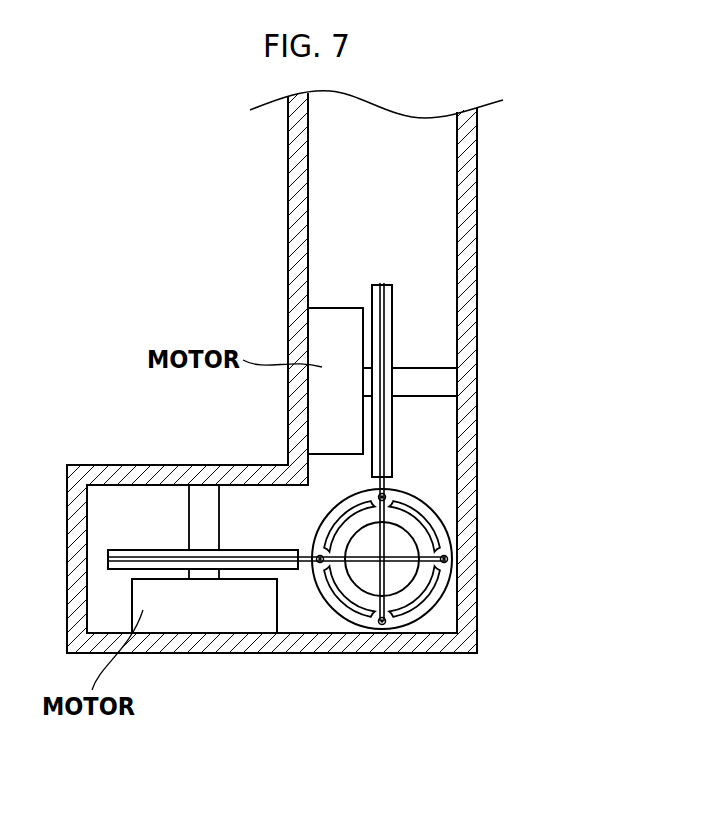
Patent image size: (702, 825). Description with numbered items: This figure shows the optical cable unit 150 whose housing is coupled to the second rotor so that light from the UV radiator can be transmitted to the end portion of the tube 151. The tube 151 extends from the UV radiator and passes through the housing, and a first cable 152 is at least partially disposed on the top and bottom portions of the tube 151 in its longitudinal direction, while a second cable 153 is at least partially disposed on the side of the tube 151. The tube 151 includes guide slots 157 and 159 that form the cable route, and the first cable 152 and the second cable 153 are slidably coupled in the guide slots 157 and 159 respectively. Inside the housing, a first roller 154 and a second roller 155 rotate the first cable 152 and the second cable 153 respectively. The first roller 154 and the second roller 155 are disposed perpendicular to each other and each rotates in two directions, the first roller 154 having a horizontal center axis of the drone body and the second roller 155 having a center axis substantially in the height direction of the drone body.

The optical cable unit 150 is at (232, 225).
The tube 151 is at (413, 596).
The first cable 152 is at (357, 600).
The second cable 153 is at (438, 524).
The first roller 154 is at (388, 313).
The second roller 155 is at (125, 553).
The guide slot 157 is at (448, 559).
The guide slot 159 is at (385, 495).